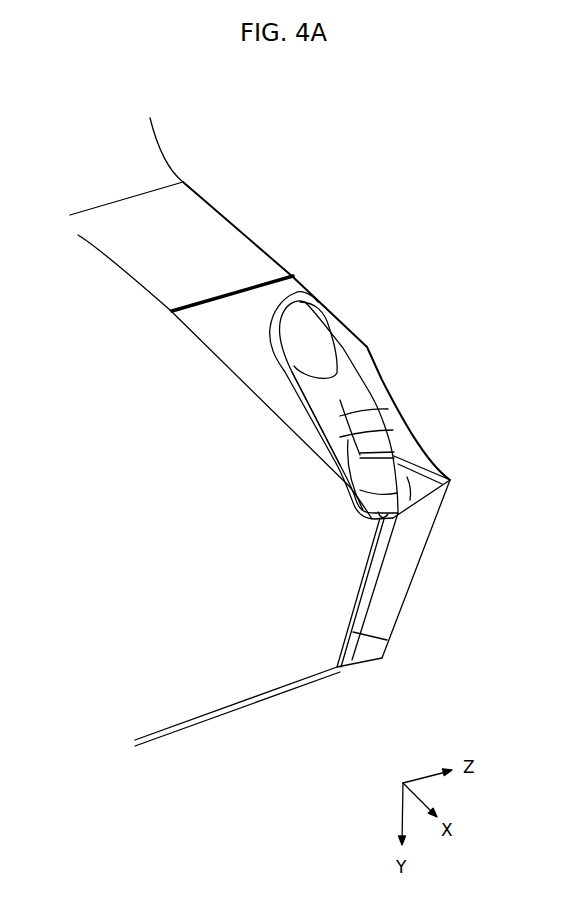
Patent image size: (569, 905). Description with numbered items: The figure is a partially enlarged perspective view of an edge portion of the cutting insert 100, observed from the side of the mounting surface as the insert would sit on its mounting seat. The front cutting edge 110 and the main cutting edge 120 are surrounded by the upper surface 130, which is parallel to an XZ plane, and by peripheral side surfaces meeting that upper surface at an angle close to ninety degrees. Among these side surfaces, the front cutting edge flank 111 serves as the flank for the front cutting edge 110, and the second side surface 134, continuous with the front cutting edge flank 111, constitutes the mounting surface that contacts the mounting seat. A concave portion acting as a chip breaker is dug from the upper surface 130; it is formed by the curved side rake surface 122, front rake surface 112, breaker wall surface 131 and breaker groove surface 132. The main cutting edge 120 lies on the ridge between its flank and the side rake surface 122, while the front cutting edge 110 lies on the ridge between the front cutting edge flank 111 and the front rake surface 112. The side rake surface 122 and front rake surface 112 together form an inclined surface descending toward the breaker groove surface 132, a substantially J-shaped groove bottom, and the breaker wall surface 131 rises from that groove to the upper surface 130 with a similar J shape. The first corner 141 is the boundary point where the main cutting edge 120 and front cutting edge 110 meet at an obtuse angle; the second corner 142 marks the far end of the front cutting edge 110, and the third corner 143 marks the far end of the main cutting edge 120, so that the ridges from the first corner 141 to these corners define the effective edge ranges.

The cutting insert 100 is at (65, 96).
The front cutting edge 110 is at (417, 508).
The front cutting edge flank 111 is at (378, 632).
The front rake surface 112 is at (420, 463).
The main cutting edge 120 is at (400, 417).
The side rake surface 122 is at (385, 390).
The upper surface 130 is at (248, 367).
The breaker wall surface 131 is at (300, 384).
The breaker groove surface 132 is at (343, 405).
The second side surface 134 is at (220, 477).
The first corner 141 is at (450, 480).
The second corner 142 is at (363, 513).
The third corner 143 is at (367, 347).